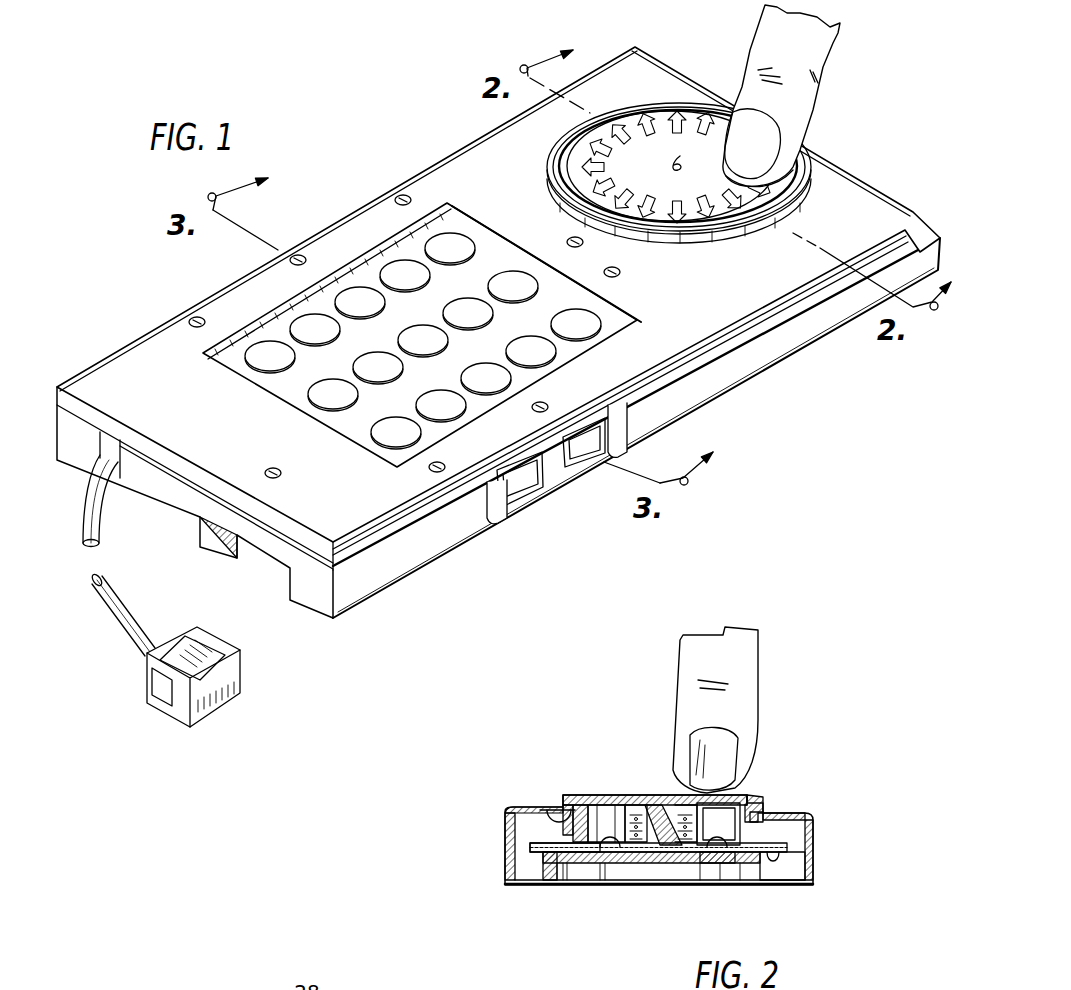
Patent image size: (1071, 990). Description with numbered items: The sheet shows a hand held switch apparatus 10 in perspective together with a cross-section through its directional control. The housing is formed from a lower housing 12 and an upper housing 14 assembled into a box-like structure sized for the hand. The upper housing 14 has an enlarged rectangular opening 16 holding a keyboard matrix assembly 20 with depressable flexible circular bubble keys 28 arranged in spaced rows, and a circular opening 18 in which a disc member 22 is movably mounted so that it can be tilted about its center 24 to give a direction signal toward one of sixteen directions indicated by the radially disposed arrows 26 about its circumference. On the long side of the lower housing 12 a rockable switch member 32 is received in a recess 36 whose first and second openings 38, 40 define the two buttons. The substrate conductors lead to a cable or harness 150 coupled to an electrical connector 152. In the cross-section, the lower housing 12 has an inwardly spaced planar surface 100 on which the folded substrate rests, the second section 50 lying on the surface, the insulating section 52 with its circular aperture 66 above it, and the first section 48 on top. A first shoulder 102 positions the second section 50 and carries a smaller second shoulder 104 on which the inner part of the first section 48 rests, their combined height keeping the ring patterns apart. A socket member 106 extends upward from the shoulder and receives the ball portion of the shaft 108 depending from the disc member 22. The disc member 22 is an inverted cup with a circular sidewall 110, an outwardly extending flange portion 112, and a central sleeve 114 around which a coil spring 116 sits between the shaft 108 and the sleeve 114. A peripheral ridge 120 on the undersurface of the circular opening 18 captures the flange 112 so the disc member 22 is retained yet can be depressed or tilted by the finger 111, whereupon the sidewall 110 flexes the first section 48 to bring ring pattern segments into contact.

In FIG. 1, the switch apparatus 10 is at (498, 332).
In FIG. 1, the lower housing 12 is at (768, 345).
In FIG. 2, the lower housing 12 is at (505, 867).
In FIG. 1, the upper housing 14 is at (845, 197).
In FIG. 2, the upper housing 14 is at (512, 810).
In FIG. 1, the rectangular opening 16 is at (616, 300).
In FIG. 1, the circular opening 18 is at (604, 127).
In FIG. 2, the circular opening 18 is at (750, 805).
In FIG. 1, the keyboard matrix assembly 20 is at (400, 313).
In FIG. 1, the disc member 22 is at (671, 117).
In FIG. 2, the disc member 22 is at (667, 769).
In FIG. 1, the center 24 is at (676, 151).
In FIG. 1, the direction arrows 26 is at (673, 117).
In FIG. 1, the bubble keys 28 is at (572, 316).
In FIG. 1, the rockable switch member 32 is at (580, 452).
In FIG. 1, the recess 36 is at (500, 517).
In FIG. 1, the first opening 38 is at (505, 488).
In FIG. 1, the second opening 40 is at (613, 430).
In FIG. 2, the first section 48 is at (540, 842).
In FIG. 2, the second section 50 is at (547, 864).
In FIG. 2, the insulating section 52 is at (533, 846).
In FIG. 2, the circular aperture 66 is at (575, 865).
In FIG. 2, the planar surface 100 is at (783, 862).
In FIG. 2, the first shoulder 102 is at (718, 862).
In FIG. 2, the second shoulder 104 is at (612, 840).
In FIG. 2, the socket member 106 is at (630, 800).
In FIG. 2, the ball portion of shaft 108 is at (660, 832).
In FIG. 2, the circular sidewall 110 is at (747, 840).
In FIG. 1, the finger 111 is at (832, 53).
In FIG. 2, the finger 111 is at (752, 657).
In FIG. 2, the flange portion 112 is at (570, 822).
In FIG. 2, the sleeve 114 is at (717, 795).
In FIG. 2, the coil spring 116 is at (640, 805).
In FIG. 2, the peripheral ridge 120 is at (762, 812).
In FIG. 1, the cable or harness 150 is at (93, 560).
In FIG. 1, the electrical connector 152 is at (220, 703).